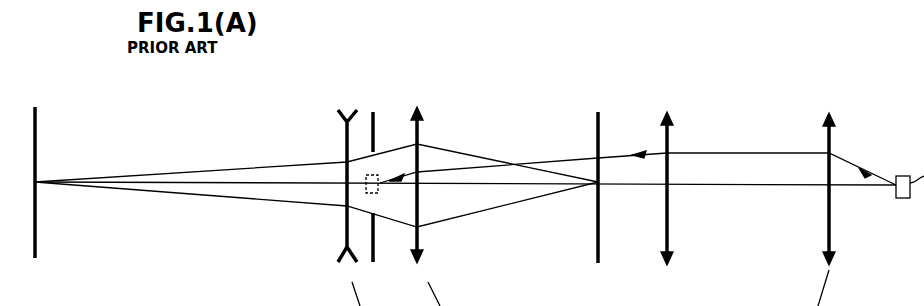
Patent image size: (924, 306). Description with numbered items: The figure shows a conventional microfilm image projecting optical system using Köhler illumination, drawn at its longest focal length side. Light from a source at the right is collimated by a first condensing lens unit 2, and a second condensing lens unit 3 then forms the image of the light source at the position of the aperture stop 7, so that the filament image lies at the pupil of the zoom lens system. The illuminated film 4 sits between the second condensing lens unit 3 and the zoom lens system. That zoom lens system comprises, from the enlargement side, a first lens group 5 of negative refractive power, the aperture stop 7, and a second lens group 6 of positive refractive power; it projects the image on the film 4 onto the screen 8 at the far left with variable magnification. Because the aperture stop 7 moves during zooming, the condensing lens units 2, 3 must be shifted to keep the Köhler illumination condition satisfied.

The first condensing lens unit 2 is at (832, 139).
The second condensing lens unit 3 is at (670, 138).
The film 4 is at (602, 127).
The first lens group 5 is at (343, 139).
The second lens group 6 is at (422, 132).
The aperture stop 7 is at (376, 132).
The screen 8 is at (37, 108).